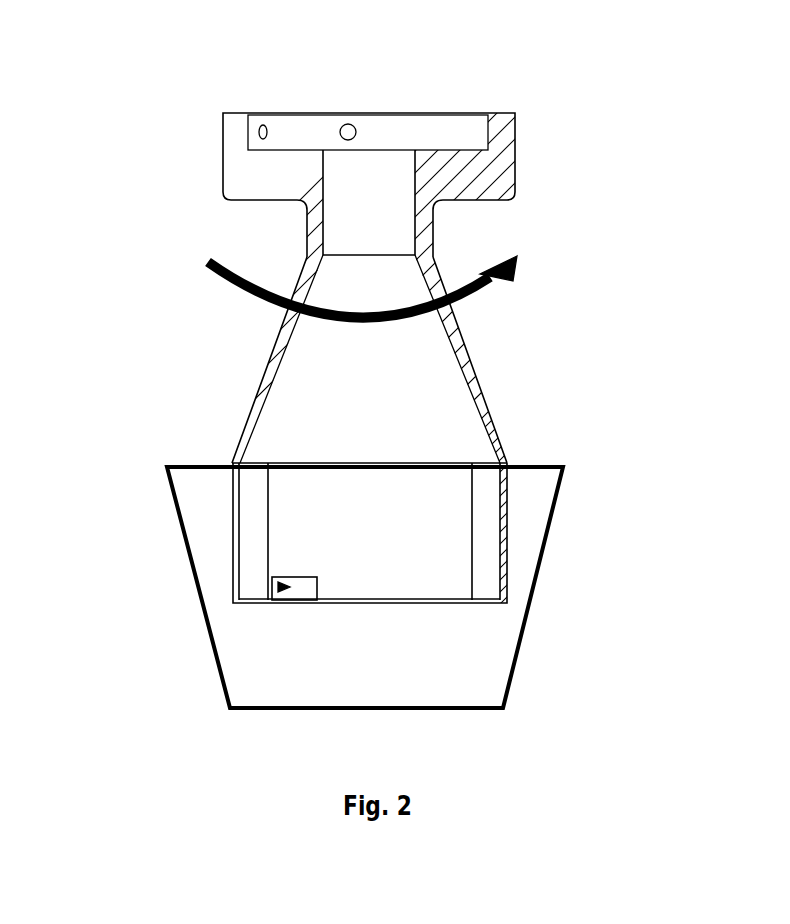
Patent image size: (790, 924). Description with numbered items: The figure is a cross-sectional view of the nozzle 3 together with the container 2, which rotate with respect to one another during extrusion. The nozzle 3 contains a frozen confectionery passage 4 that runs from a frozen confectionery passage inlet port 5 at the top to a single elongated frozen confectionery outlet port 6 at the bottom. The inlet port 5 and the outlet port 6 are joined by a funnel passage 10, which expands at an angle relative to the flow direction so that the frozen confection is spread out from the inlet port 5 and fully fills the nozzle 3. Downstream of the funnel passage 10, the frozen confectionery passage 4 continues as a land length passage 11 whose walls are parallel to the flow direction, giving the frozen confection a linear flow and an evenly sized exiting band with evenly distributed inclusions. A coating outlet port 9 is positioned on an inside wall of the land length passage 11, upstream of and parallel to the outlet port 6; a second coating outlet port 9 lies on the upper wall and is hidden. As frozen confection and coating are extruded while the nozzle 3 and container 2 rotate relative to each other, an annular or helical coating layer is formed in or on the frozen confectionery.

The container 2 is at (508, 680).
The nozzle 3 is at (443, 193).
The frozen confectionery passage 4 is at (525, 405).
The frozen confectionery passage inlet port 5 is at (373, 167).
The frozen confectionery outlet port 6 is at (334, 607).
The coating outlet port 9 is at (268, 587).
The funnel passage 10 is at (458, 333).
The land length passage 11 is at (512, 573).